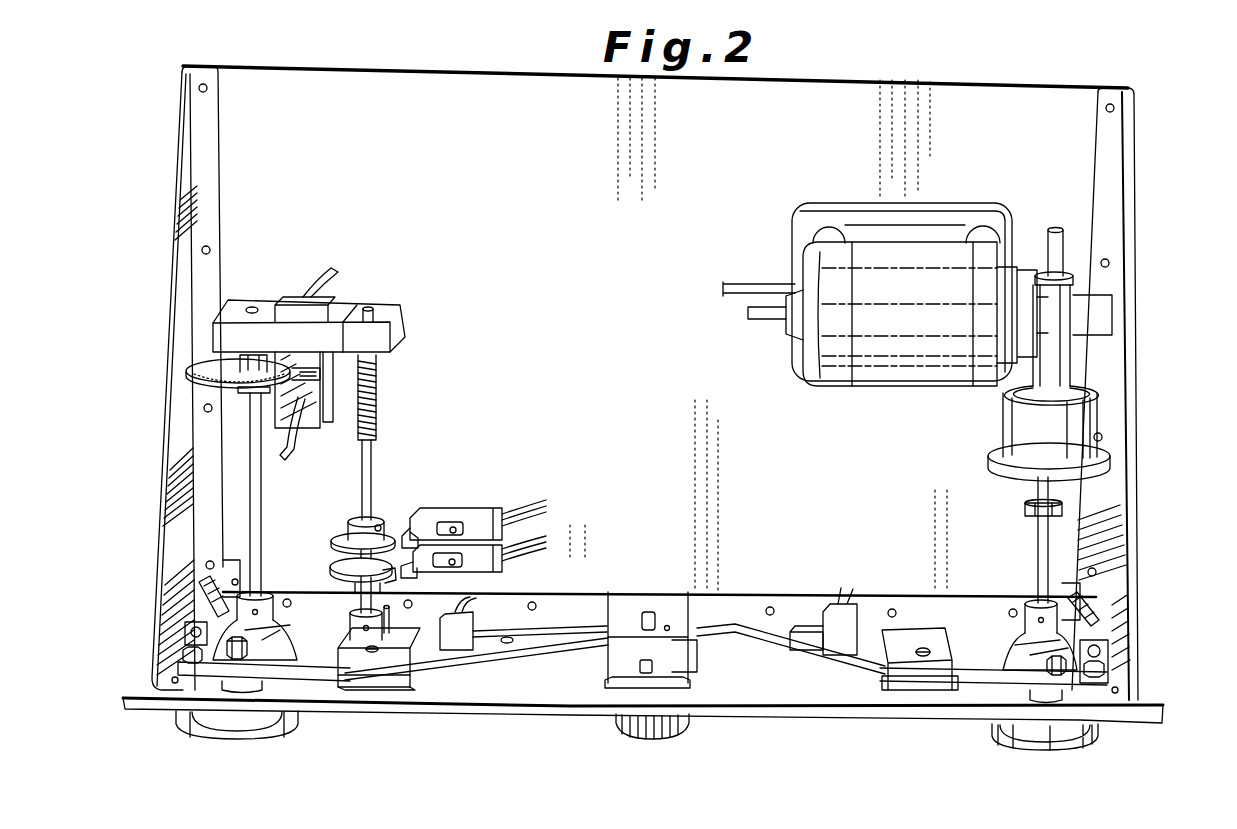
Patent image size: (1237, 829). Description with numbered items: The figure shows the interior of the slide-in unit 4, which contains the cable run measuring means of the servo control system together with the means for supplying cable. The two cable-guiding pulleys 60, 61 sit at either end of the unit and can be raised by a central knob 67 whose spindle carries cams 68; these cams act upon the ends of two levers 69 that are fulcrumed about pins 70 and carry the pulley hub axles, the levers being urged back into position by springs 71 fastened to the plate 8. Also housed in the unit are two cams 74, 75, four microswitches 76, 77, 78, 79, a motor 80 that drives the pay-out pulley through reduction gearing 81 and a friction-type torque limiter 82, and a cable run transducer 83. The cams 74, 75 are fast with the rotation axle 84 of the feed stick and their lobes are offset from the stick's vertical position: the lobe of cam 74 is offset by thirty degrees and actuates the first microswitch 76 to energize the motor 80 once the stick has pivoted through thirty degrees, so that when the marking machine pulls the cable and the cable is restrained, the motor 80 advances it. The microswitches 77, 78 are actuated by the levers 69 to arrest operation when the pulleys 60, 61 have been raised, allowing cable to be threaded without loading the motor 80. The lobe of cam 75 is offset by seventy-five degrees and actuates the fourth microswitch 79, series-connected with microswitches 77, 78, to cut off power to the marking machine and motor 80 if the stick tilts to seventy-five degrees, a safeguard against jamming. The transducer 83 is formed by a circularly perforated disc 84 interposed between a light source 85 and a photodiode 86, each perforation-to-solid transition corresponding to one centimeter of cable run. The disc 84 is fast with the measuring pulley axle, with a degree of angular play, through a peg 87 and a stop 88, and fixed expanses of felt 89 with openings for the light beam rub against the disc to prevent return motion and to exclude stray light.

The slide-in unit 4 is at (1136, 193).
The plate 8 is at (578, 151).
The cable-guiding pulley 60 is at (1093, 737).
The cable-guiding pulley 61 is at (198, 726).
The central knob 67 is at (664, 728).
The cams 68 is at (697, 640).
The levers 69 is at (528, 665).
The pins 70 is at (373, 652).
The springs 71 is at (205, 602).
The cam 74 is at (345, 538).
The cam 75 is at (345, 565).
The first microswitch 76 is at (428, 553).
The microswitch 77 is at (487, 646).
The microswitch 78 is at (828, 606).
The fourth microswitch 79 is at (440, 578).
The motor 80 is at (883, 365).
The reduction gearing 81 is at (1072, 307).
The friction-type torque limiter 82 is at (1083, 443).
The cable run transducer 83 is at (259, 297).
The circularly perforated disc 84 is at (200, 371).
The light source 85 is at (306, 418).
The photodiode 86 is at (324, 301).
The peg 87 is at (238, 389).
The stop 88 is at (267, 394).
The expanses of felt 89 is at (378, 400).